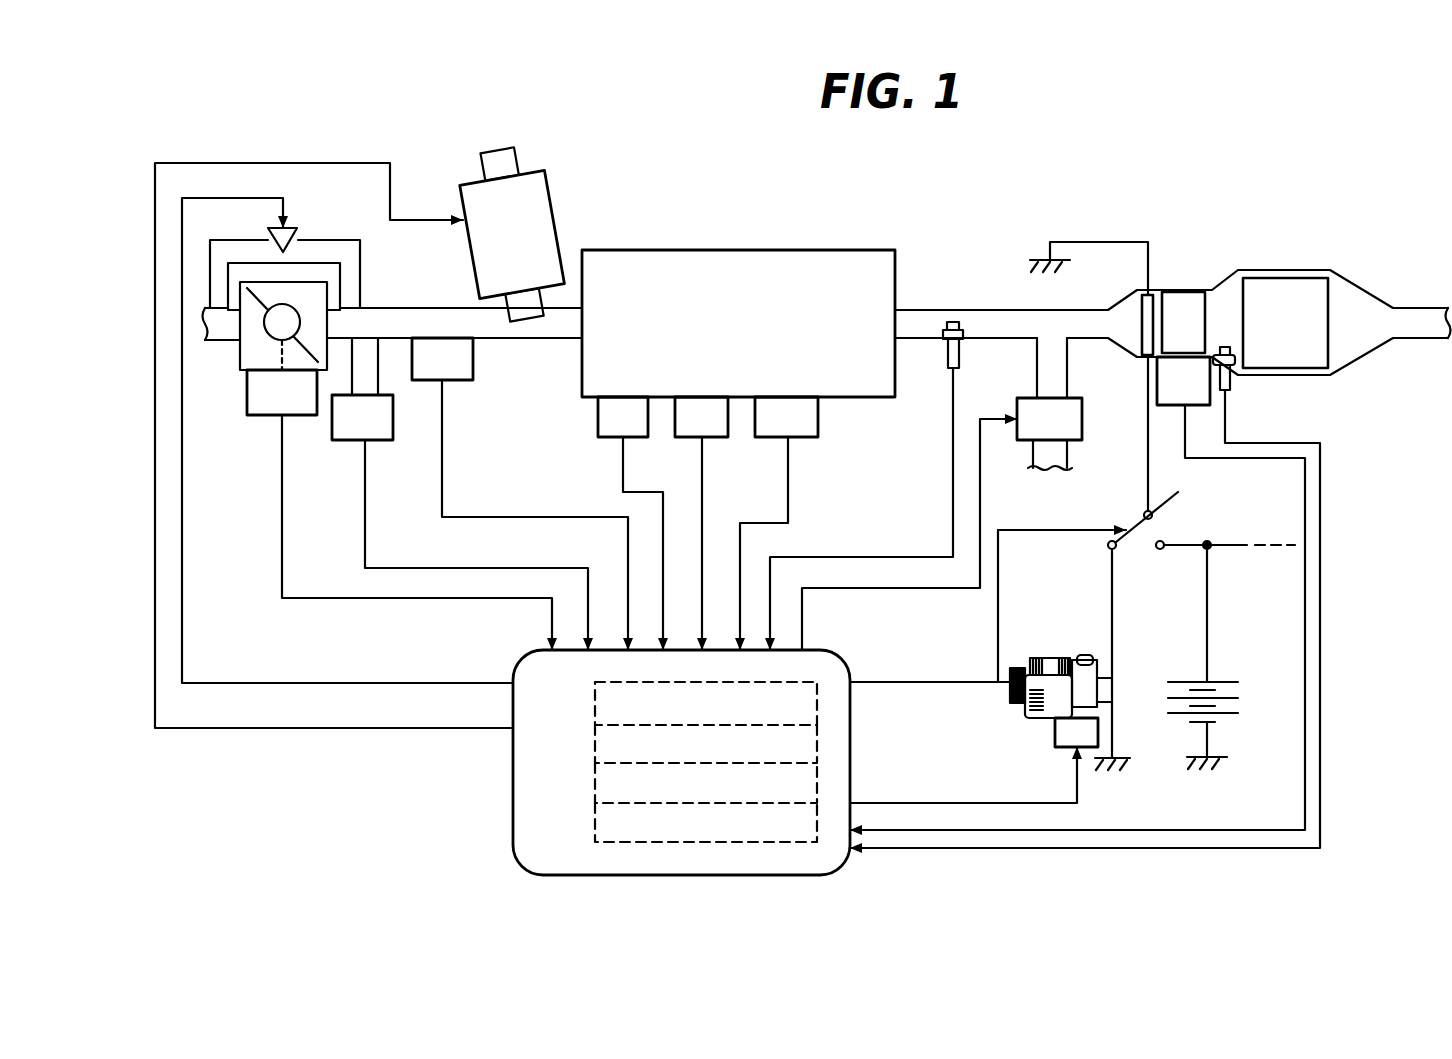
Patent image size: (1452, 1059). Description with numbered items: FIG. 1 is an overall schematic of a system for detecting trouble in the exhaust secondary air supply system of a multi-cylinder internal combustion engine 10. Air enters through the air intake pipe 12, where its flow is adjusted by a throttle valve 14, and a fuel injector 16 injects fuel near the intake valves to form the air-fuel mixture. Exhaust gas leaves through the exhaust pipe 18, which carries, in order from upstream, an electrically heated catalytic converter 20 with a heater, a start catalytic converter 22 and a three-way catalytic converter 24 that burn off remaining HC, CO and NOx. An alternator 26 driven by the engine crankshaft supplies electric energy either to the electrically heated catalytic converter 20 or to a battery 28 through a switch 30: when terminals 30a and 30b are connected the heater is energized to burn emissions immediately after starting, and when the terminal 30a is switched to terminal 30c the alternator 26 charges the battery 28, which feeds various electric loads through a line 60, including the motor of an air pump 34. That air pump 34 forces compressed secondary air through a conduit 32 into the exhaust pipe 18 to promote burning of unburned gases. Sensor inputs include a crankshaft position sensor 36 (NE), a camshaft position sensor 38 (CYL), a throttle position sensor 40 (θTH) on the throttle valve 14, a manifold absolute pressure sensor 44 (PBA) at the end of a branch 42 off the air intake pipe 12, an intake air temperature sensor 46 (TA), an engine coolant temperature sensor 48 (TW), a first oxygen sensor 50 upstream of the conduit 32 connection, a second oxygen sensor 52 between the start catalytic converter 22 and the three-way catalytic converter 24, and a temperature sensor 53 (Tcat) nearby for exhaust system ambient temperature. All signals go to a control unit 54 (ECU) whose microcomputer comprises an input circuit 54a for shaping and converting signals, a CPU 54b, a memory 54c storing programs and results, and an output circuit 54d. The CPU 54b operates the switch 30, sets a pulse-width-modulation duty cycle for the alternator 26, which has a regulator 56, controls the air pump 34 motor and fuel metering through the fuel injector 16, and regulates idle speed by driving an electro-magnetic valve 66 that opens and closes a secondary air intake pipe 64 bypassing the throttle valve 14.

The engine 10 is at (852, 250).
The air intake pipe 12 is at (408, 308).
The throttle valve 14 is at (250, 348).
The fuel injector 16 is at (566, 222).
The exhaust pipe 18 is at (975, 310).
The electrically heated catalytic converter (EHC) 20 is at (1152, 295).
The start catalytic converter 22 is at (1192, 300).
The three-way catalytic converter 24 is at (1312, 292).
The alternator 26 is at (1027, 656).
The battery 28 is at (1232, 695).
The switch 30 is at (1122, 618).
The terminal 30a is at (1108, 548).
The terminal 30b is at (1176, 506).
The terminal 30c is at (1160, 550).
The conduit 32 is at (1067, 382).
The air pump 34 is at (1020, 445).
The crankshaft position sensor 36 is at (712, 442).
The camshaft position sensor 38 is at (815, 440).
The throttle position sensor 40 is at (290, 422).
The branch 42 is at (373, 363).
The manifold absolute pressure sensor 44 is at (383, 441).
The intake air temperature sensor 46 is at (474, 368).
The engine coolant temperature sensor 48 is at (633, 439).
The first oxygen sensor 50 is at (943, 355).
The second oxygen sensor 52 is at (1233, 385).
The temperature sensor 53 is at (1178, 406).
The control unit (ECU) 54 is at (674, 758).
The input circuit 54a is at (830, 683).
The CPU 54b is at (820, 742).
The memory 54c is at (820, 790).
The output circuit 54d is at (820, 832).
The regulator 56 is at (1055, 737).
The line 60 is at (1232, 548).
The secondary air intake pipe 64 is at (297, 255).
The electro-magnetic valve 66 is at (268, 234).